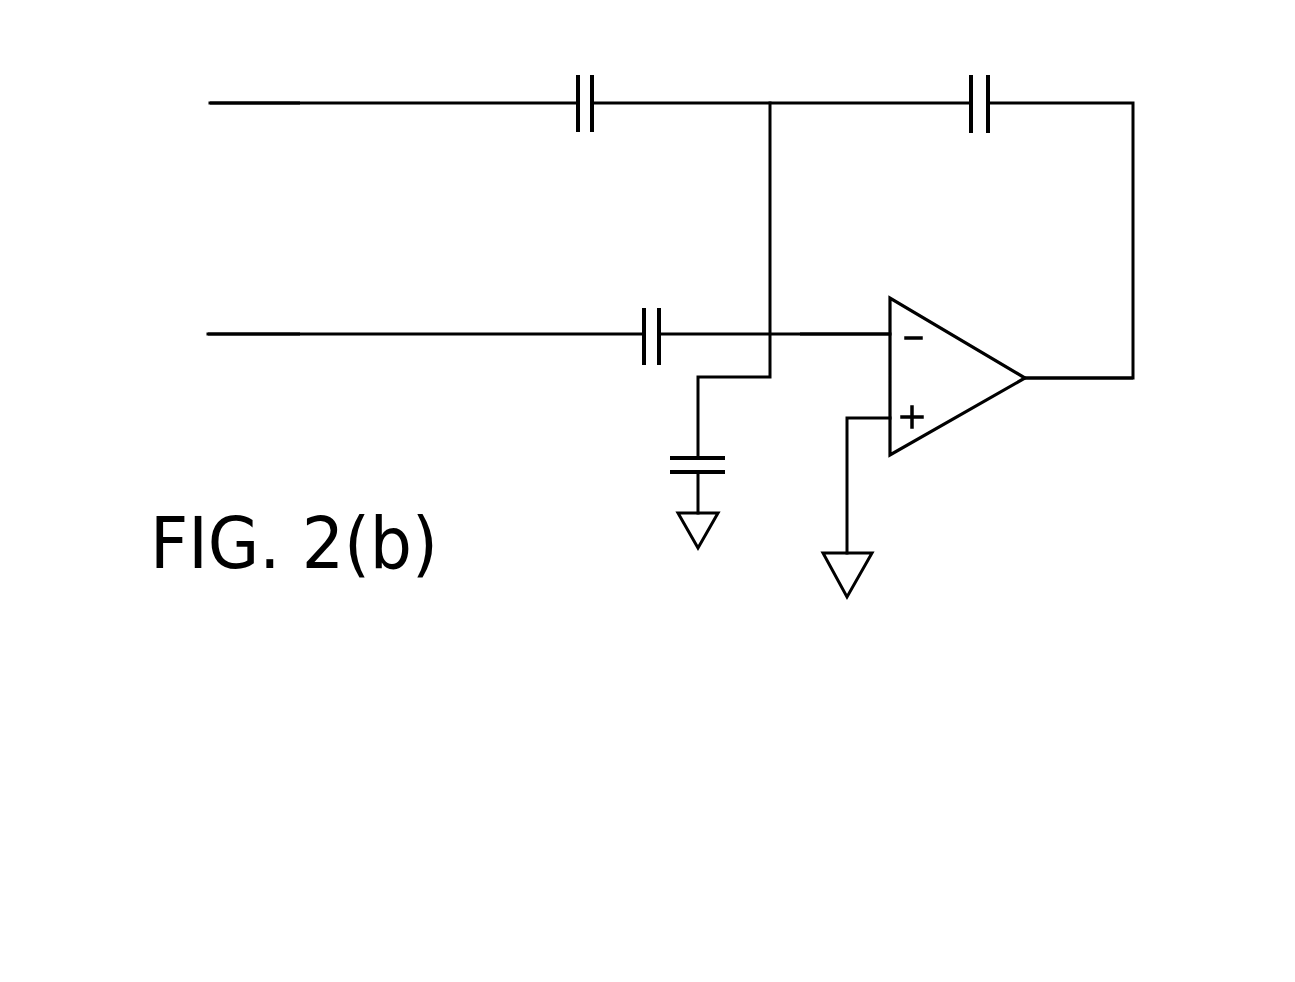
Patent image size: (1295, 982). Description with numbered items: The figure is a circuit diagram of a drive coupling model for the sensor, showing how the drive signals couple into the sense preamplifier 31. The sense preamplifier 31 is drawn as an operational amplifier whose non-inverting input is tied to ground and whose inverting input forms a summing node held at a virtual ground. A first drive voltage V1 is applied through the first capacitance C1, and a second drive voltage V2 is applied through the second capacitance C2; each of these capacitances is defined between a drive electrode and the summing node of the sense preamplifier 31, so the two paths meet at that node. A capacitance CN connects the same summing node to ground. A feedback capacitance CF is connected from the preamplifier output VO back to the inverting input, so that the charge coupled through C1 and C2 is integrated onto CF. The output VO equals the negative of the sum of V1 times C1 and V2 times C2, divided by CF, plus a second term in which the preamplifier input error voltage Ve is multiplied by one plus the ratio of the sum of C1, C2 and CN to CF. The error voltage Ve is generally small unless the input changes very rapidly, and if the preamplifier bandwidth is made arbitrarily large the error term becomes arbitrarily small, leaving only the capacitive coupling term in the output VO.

The sense preamplifier 31 is at (728, 315).
The first capacitance C1 is at (594, 77).
The second capacitance C2 is at (660, 307).
The feedback capacitance CF is at (985, 77).
The capacitance CN is at (723, 470).
The first drive voltage V1 is at (231, 112).
The second drive voltage V2 is at (231, 337).
The preamplifier input error voltage Ve is at (845, 306).
The preamplifier output VO is at (1109, 366).